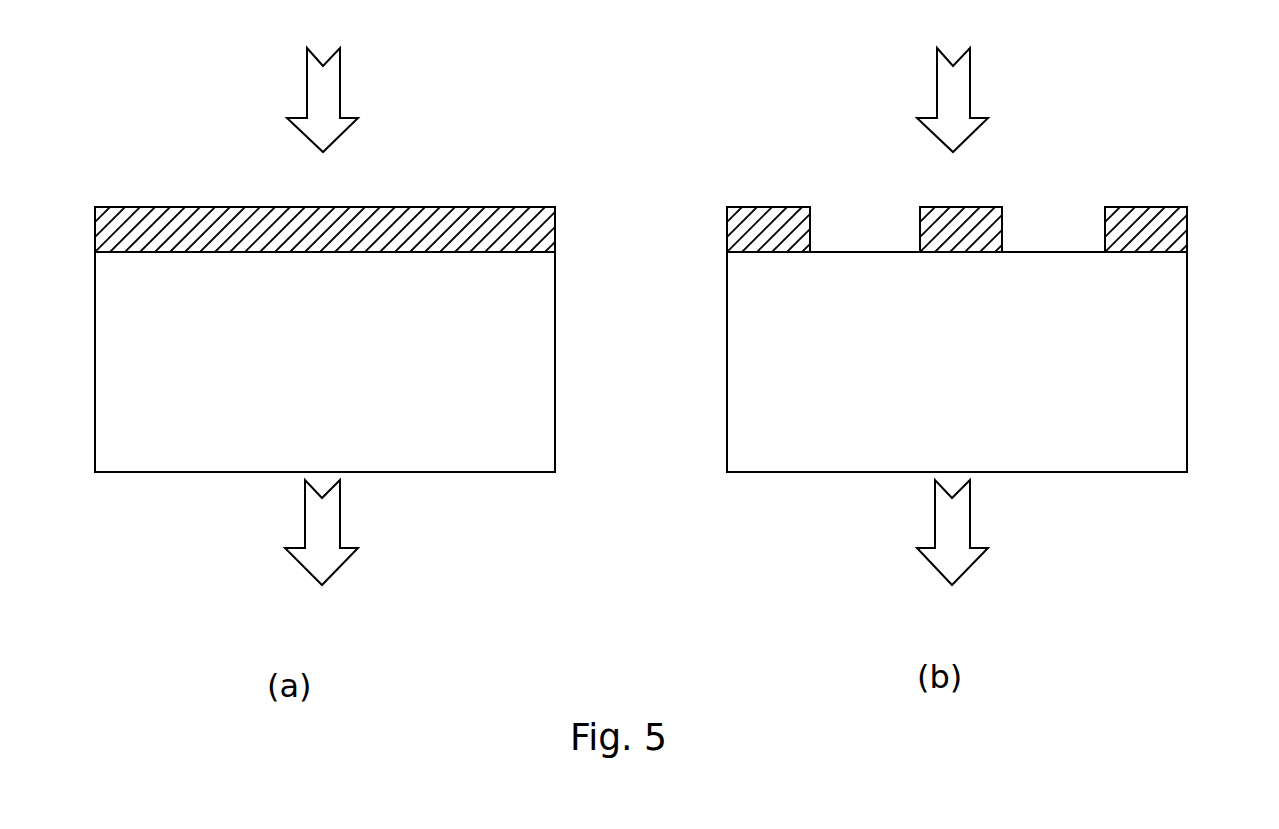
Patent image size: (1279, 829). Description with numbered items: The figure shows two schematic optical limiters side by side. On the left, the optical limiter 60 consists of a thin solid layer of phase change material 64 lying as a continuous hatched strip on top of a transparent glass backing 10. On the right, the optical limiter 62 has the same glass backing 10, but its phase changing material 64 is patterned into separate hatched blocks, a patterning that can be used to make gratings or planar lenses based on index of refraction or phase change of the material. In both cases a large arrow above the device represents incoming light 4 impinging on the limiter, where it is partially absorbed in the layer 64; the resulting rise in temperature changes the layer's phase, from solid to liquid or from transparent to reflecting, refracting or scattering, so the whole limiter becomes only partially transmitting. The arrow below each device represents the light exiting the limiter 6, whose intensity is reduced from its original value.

The light 4 is at (637, 100).
The light exiting the limiter 6 is at (636, 532).
The glass backing 10 is at (190, 453).
The optical limiter 60 is at (568, 158).
The optical limiter 62 is at (1200, 158).
The phase change material layer 64 is at (235, 247).